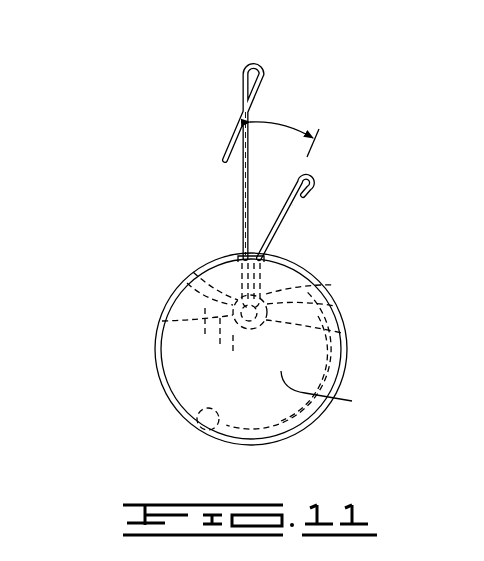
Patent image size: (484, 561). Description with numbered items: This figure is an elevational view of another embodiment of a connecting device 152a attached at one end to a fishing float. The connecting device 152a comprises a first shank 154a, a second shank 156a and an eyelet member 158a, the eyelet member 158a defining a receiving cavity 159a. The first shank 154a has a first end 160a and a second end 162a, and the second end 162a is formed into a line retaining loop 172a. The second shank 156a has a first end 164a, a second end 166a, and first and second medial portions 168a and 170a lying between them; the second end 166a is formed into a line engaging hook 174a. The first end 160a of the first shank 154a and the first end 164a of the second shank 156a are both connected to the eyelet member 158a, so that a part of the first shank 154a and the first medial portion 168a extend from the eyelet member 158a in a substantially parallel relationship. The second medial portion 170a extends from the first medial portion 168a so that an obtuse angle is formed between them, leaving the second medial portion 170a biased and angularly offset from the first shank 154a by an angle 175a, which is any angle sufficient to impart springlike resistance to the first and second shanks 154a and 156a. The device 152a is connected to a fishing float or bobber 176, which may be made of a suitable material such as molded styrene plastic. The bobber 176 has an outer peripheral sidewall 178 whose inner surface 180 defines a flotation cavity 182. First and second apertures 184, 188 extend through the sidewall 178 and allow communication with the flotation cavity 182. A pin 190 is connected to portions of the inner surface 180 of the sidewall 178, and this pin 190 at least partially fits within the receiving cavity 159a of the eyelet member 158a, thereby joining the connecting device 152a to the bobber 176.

The connecting device 152a is at (134, 106).
The first shank 154a is at (241, 186).
The second shank 156a is at (279, 226).
The eyelet member 158a is at (343, 333).
The receiving cavity 159a is at (191, 283).
The first end of the first shank 160a is at (204, 268).
The second end of the first shank 162a is at (265, 72).
The first end of the second shank 164a is at (336, 306).
The second end of the second shank 166a is at (308, 173).
The first medial portion 168a is at (334, 285).
The second medial portion 170a is at (293, 206).
The line retaining loop 172a is at (248, 60).
The line engaging hook 174a is at (322, 174).
The angle 175a is at (285, 124).
The fishing float or bobber 176 is at (170, 401).
The outer peripheral sidewall 178 is at (160, 376).
The inner surface 180 is at (199, 429).
The flotation cavity 182 is at (310, 360).
The first aperture 184 is at (238, 258).
The second aperture 188 is at (268, 262).
The pin 190 is at (162, 320).